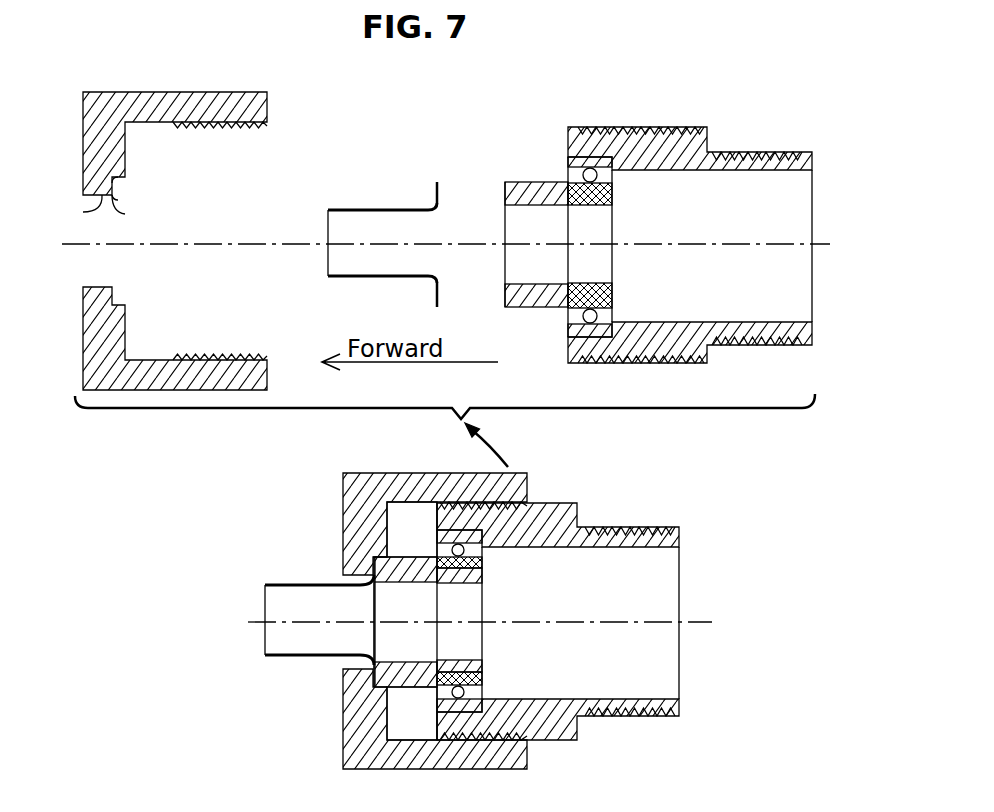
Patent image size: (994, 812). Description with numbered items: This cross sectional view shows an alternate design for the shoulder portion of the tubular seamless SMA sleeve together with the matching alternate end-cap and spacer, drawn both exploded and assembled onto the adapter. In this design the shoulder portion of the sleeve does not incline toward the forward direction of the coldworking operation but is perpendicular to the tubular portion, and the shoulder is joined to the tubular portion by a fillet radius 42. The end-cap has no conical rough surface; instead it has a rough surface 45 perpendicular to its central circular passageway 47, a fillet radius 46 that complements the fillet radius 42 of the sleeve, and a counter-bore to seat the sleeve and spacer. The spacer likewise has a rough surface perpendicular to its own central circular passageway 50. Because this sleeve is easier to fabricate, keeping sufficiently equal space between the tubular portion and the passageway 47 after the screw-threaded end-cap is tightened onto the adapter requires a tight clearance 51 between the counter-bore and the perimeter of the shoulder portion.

The fillet radius 42 is at (435, 206).
The rough surface 45 is at (113, 197).
The fillet radius 46 is at (122, 212).
The central circular passageway 47 is at (83, 212).
The central circular passageway 50 is at (518, 277).
The tight clearance 51 is at (402, 530).